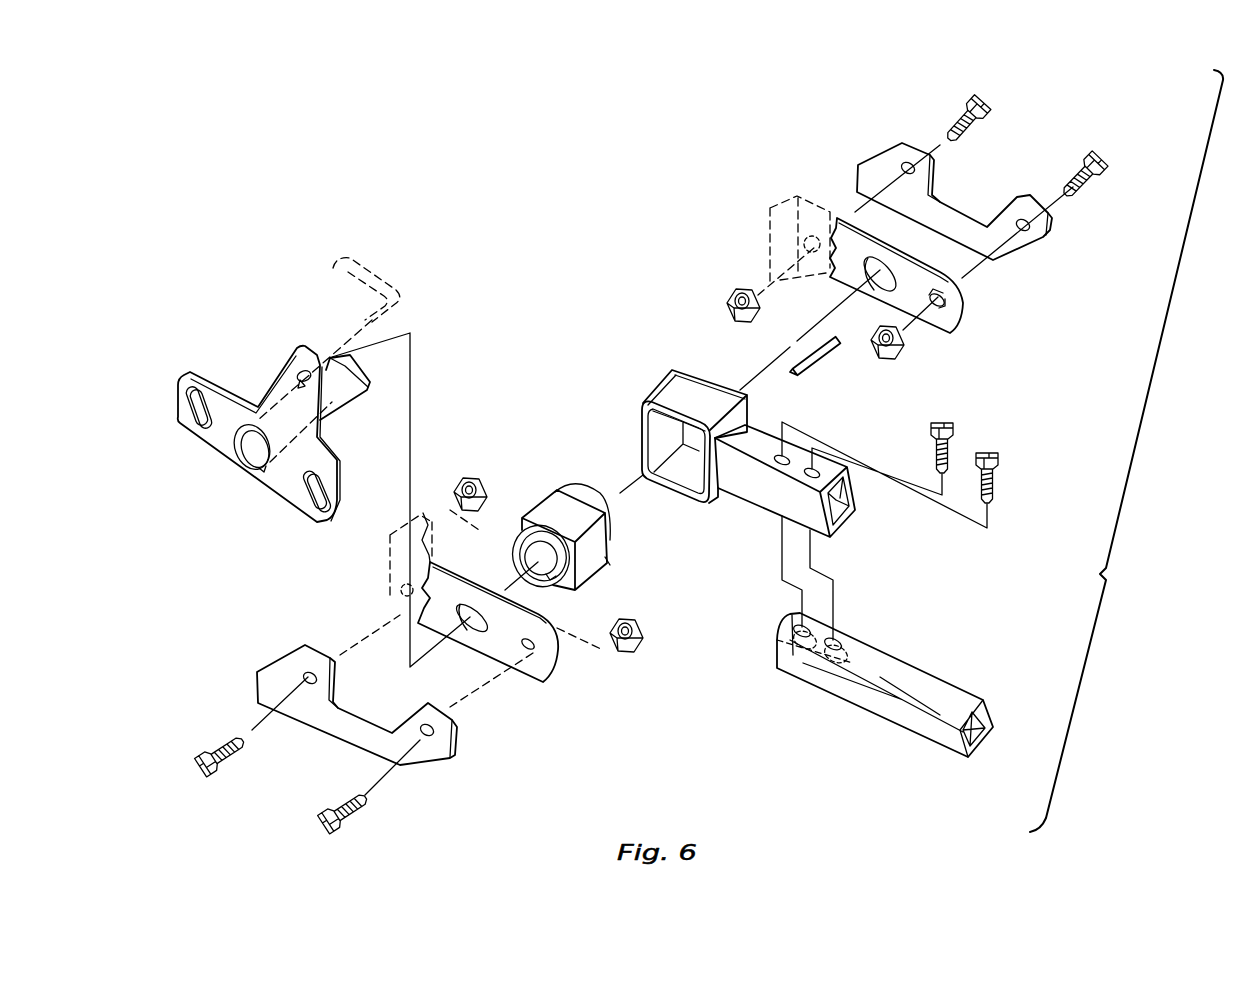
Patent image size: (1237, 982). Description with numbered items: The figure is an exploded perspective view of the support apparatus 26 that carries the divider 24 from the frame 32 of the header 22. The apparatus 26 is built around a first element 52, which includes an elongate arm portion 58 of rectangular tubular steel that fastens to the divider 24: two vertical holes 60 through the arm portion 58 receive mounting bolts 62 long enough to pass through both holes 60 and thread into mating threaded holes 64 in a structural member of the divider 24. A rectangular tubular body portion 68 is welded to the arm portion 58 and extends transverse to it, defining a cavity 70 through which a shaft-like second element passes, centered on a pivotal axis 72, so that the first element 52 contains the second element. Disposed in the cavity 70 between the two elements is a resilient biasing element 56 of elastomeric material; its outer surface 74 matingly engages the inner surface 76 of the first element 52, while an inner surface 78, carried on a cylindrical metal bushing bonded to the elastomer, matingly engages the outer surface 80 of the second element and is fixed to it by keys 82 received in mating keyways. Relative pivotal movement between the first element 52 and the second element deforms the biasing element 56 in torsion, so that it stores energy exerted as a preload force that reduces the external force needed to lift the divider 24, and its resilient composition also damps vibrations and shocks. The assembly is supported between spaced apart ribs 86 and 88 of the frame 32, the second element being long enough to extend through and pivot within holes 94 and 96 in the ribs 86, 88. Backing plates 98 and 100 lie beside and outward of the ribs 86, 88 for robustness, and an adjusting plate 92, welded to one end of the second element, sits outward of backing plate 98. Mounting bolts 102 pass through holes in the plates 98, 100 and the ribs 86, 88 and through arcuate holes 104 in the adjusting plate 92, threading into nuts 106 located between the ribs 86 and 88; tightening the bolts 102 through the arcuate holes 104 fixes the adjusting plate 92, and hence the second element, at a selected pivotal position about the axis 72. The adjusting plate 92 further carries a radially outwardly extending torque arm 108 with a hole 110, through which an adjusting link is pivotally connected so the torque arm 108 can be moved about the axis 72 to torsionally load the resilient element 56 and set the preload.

The header 22 is at (573, 703).
The divider 24 is at (887, 685).
The support apparatus 26 is at (1126, 451).
The frame 32 is at (713, 451).
The first element 52 is at (785, 455).
The resilient biasing element 56 is at (550, 490).
The arm portion 58 is at (851, 519).
The vertical holes 60 is at (812, 478).
The mounting bolts 62 is at (991, 452).
The threaded holes 64 is at (831, 650).
The body portion 68 is at (667, 438).
The cavity 70 is at (688, 477).
The pivotal axis 72 is at (1000, 208).
The outer surface 74 is at (598, 507).
The inner surface 76 is at (655, 432).
The inner surface 78 is at (513, 545).
The outer surface 80 is at (360, 392).
The keys 82 is at (842, 353).
The rib 86 is at (513, 610).
The rib 88 is at (928, 264).
The adjusting plate 92 is at (331, 462).
The hole 94 is at (473, 628).
The hole 96 is at (960, 279).
The backing plate 98 is at (430, 762).
The backing plate 100 is at (1053, 229).
The mounting bolts 102 is at (316, 822).
The arcuate holes 104 is at (188, 372).
The nuts 106 is at (466, 476).
The torque arm 108 is at (372, 378).
The hole 110 is at (297, 373).